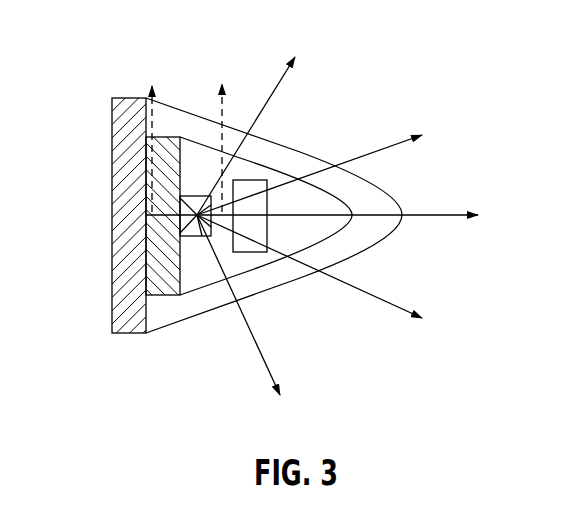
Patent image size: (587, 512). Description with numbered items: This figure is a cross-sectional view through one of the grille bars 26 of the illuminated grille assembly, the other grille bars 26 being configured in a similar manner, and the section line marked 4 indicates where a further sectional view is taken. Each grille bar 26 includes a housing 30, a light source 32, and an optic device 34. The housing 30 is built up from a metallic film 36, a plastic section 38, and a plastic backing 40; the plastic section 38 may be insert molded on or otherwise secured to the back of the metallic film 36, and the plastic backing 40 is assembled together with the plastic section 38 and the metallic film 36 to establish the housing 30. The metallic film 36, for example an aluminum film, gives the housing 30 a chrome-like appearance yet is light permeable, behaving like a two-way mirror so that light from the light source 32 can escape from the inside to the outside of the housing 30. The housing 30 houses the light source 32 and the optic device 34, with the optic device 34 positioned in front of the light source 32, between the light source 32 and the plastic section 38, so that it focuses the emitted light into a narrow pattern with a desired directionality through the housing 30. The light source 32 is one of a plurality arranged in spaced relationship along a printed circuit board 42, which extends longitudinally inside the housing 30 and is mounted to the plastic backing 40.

The grille bar 26 is at (181, 88).
The housing 30 is at (300, 134).
The light source 32 is at (199, 212).
The optic device 34 is at (250, 253).
The metallic film 36 is at (377, 189).
The plastic section 38 is at (363, 240).
The plastic backing 40 is at (112, 236).
The printed circuit board 42 is at (153, 297).
The section line 4- 4 is at (186, 129).